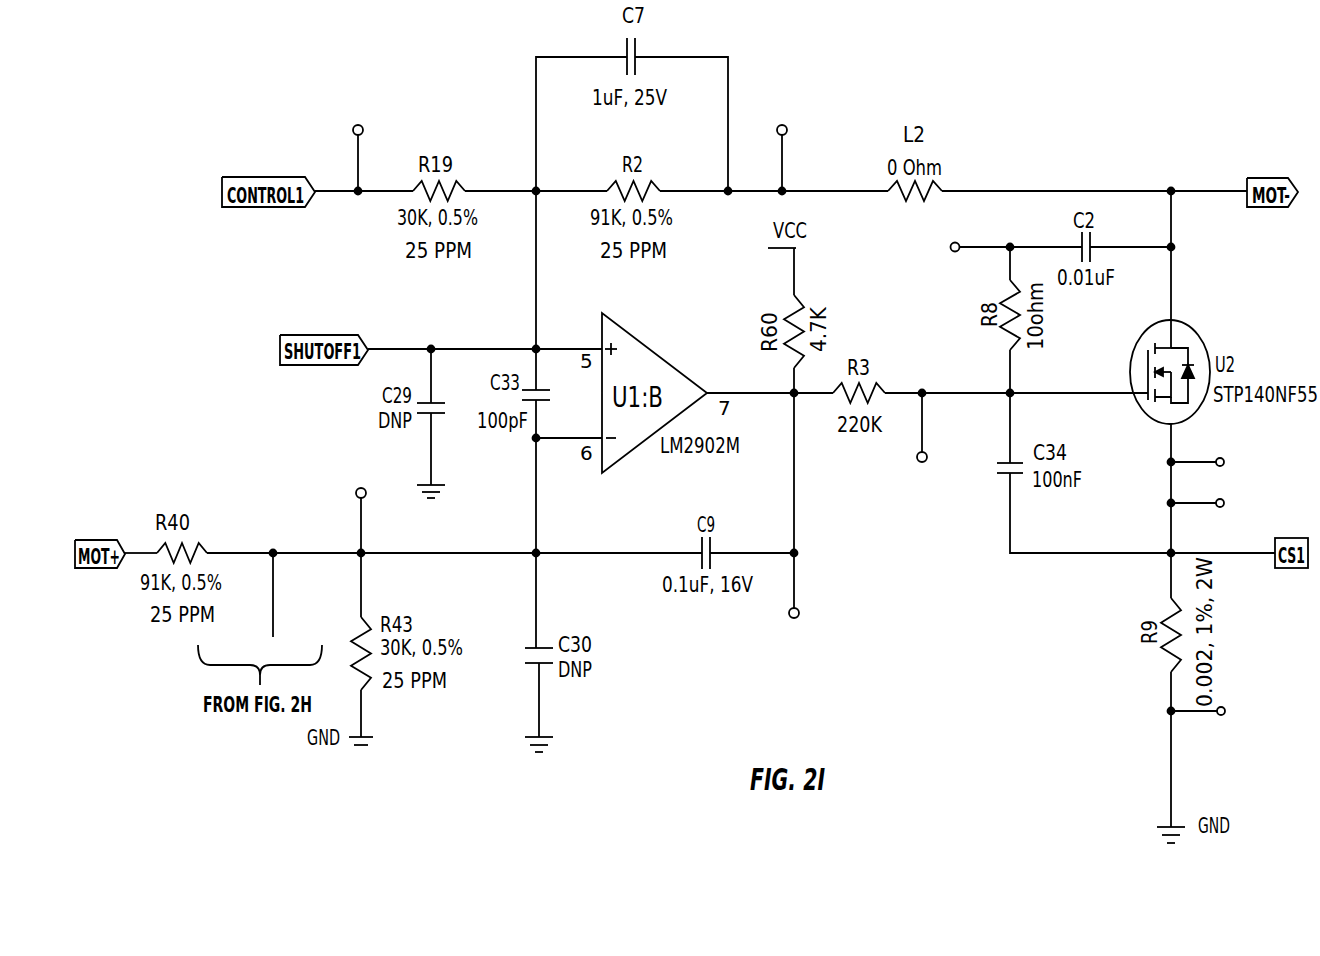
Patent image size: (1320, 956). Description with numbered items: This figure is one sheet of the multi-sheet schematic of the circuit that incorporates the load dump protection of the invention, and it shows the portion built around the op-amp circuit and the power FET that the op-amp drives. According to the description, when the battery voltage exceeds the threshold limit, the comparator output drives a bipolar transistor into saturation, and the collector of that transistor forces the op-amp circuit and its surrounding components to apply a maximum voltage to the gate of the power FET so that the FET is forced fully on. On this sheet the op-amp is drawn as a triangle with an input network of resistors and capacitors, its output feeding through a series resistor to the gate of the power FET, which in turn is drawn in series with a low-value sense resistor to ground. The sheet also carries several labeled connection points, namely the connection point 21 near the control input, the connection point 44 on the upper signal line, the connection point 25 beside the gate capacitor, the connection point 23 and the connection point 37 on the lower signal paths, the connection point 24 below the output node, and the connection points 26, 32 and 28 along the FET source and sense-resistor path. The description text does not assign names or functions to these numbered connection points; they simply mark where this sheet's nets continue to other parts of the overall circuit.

The control signal terminal 21 is at (356, 143).
The terminal 44 is at (781, 143).
The terminal 25 is at (940, 252).
The terminal 23 is at (360, 505).
The terminal 37 is at (922, 444).
The terminal 24 is at (796, 603).
The terminal 26 is at (1211, 465).
The terminal 32 is at (1211, 509).
The current sense terminal 28 is at (1213, 715).